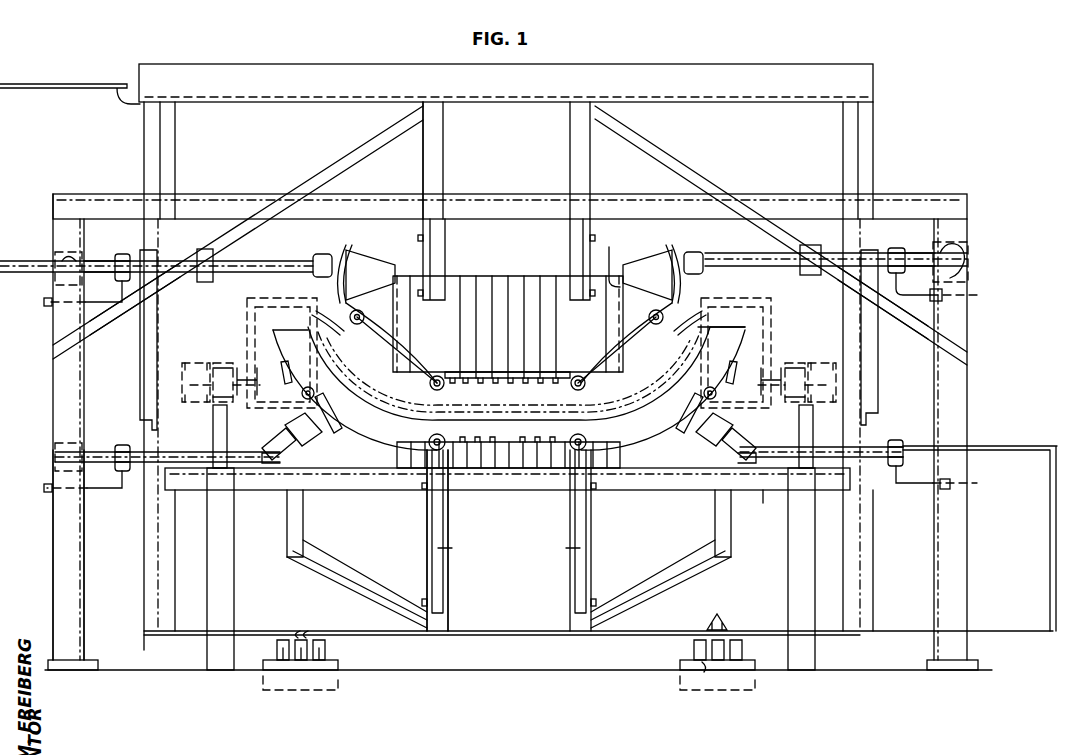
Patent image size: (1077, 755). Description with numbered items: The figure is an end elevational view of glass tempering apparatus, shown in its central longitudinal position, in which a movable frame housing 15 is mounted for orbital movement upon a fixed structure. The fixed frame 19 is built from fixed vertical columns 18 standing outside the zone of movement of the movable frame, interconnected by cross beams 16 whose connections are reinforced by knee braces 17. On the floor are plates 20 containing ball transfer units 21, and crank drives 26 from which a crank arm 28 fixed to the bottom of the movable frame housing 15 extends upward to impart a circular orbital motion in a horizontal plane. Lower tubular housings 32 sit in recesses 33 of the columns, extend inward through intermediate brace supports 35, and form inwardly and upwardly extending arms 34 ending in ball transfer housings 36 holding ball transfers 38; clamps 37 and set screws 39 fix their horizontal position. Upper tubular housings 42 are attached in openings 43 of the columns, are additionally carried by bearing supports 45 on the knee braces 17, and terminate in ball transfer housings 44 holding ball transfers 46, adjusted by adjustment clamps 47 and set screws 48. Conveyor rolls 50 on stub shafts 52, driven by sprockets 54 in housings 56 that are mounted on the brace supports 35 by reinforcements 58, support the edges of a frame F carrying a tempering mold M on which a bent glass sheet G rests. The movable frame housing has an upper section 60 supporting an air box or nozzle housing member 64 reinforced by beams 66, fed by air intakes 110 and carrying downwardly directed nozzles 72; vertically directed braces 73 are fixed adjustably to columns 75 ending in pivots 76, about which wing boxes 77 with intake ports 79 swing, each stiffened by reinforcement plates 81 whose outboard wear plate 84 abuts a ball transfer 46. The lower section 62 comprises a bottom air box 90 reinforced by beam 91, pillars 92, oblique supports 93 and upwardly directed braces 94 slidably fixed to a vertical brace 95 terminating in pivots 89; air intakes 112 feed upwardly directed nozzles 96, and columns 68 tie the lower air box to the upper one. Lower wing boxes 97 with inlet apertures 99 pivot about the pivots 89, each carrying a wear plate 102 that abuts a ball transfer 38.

The air intakes 110 is at (27, 84).
The movable frame housing 15 is at (873, 121).
The cross beams 16 is at (515, 202).
The beams 66 is at (306, 181).
The knee braces 17 is at (165, 284).
The vertically directed braces 73 is at (570, 163).
The upper section 60 is at (415, 179).
The columns 75 is at (426, 251).
The ball transfer housings 44 is at (310, 261).
The upper tubular housings 42 is at (100, 260).
The openings 43 is at (60, 261).
The adjustment clamps 47 is at (122, 255).
The bearing supports 45 is at (203, 249).
The set screws 48 is at (46, 304).
The ball transfers 46 is at (323, 254).
The wear plate 84 is at (347, 252).
The wing boxes 77 is at (341, 331).
The intake ports 79 is at (362, 322).
The reinforcement plates 81 is at (608, 261).
The air box or nozzle housing member 64 is at (492, 272).
The downwardly directed nozzles 72 is at (556, 385).
The pivots 76 is at (445, 388).
The tempering mold M is at (314, 330).
The bent glass sheet G is at (360, 380).
The wear plate 102 is at (285, 386).
The inlet apertures 99 is at (302, 398).
The ball transfers 38 is at (322, 424).
The arms 34 is at (283, 441).
The ball transfer housings 36 is at (311, 441).
The wing boxes 97 is at (754, 339).
The pivots 89 is at (572, 450).
The upwardly directed nozzles 96 is at (508, 442).
The bottom air box 90 is at (507, 497).
The beam 91 is at (760, 506).
The lower section 62 is at (419, 543).
The upwardly directed braces 94 is at (426, 517).
The vertical brace 95 is at (452, 547).
The pillars 92 is at (303, 516).
The oblique supports 93 is at (357, 583).
The intermediate brace supports 35 is at (222, 490).
The reinforcements 58 is at (212, 432).
The columns 68 is at (141, 376).
The fixed frame 19 is at (44, 380).
The fixed vertical columns 18 is at (968, 373).
The sprockets 54 is at (196, 364).
The stub shafts 52 is at (226, 364).
The housings 56 is at (190, 404).
The conveyor rolls 50 is at (248, 398).
The frame F is at (247, 318).
The lower tubular housings 32 is at (97, 452).
The clamps 37 is at (122, 445).
The recesses 33 is at (56, 456).
The set screws 39 is at (113, 490).
The air intakes 112 is at (1016, 446).
The plates 20 is at (330, 660).
The crank drives 26 is at (328, 642).
The crank arm 28 is at (303, 625).
The ball transfer units 21 is at (723, 611).